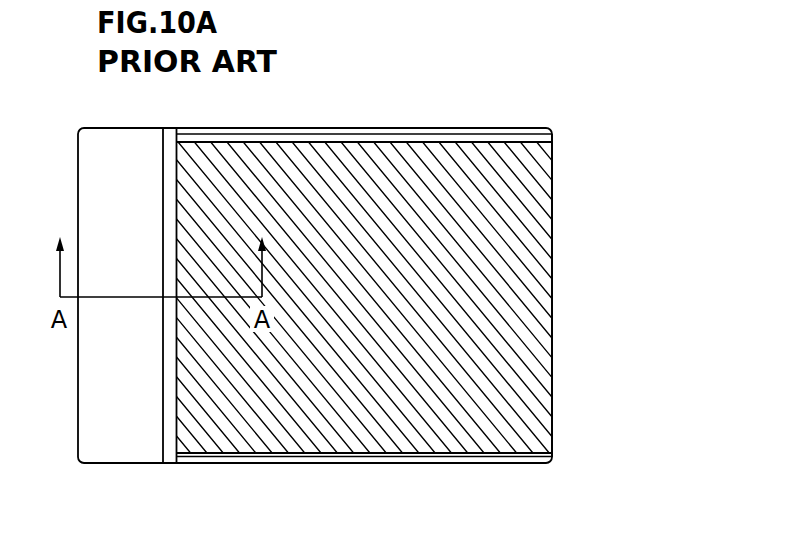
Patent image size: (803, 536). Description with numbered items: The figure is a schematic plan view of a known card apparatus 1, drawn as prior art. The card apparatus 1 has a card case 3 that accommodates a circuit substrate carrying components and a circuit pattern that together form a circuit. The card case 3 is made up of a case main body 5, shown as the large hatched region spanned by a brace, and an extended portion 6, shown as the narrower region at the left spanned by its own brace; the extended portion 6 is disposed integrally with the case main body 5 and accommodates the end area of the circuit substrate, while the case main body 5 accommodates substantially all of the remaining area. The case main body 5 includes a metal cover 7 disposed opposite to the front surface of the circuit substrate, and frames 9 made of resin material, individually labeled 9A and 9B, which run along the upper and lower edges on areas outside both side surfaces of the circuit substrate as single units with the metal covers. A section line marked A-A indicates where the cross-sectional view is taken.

The card apparatus 1 is at (600, 87).
The card case 3 is at (566, 271).
The case main body 5 is at (548, 123).
The extended portion 6 is at (175, 116).
The metal cover 7 is at (552, 338).
The frames 9 is at (415, 319).
The frame 9A is at (540, 132).
The frame 9B is at (518, 460).